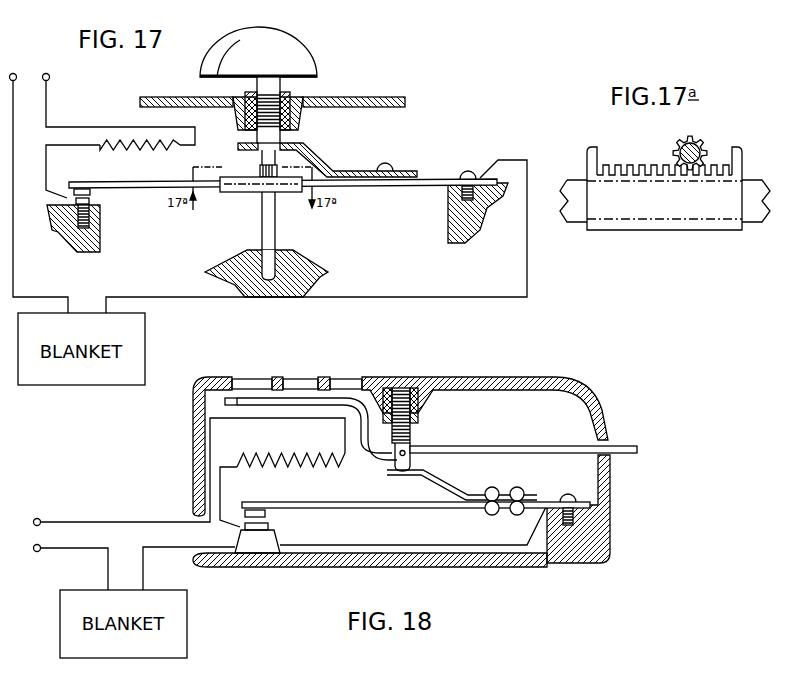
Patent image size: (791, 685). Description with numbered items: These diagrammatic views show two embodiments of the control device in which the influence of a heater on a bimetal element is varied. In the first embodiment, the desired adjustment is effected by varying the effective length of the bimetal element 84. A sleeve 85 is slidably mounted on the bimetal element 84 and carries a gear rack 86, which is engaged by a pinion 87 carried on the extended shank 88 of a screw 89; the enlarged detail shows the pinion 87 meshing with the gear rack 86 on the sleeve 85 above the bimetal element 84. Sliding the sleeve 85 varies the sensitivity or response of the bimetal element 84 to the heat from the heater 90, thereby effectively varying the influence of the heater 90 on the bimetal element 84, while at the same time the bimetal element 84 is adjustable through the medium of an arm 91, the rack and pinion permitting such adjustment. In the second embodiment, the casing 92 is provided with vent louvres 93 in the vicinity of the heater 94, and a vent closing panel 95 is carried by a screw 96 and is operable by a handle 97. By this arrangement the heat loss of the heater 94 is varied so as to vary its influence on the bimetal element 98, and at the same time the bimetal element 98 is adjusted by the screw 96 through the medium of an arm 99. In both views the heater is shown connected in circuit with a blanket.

In FIG. 17, the bimetal element 84 is at (170, 188).
In FIG. 17A, the bimetal element 84 is at (752, 198).
In FIG. 17, the sleeve 85 is at (304, 228).
In FIG. 17A, the sleeve 85 is at (654, 210).
In FIG. 17A, the gear rack 86 is at (648, 166).
In FIG. 17, the pinion 87 is at (258, 170).
In FIG. 17A, the pinion 87 is at (707, 150).
In FIG. 17, the extended shank 88 is at (262, 218).
In FIG. 17A, the extended shank 88 is at (694, 143).
In FIG. 17, the screw 89 is at (287, 98).
In FIG. 17, the heater 90 is at (160, 144).
In FIG. 17, the arm 91 is at (322, 167).
In FIG. 18, the casing 92 is at (447, 378).
In FIG. 18, the vent louvres 93 is at (343, 382).
In FIG. 18, the heater 94 is at (277, 462).
In FIG. 18, the vent closing panel 95 is at (230, 402).
In FIG. 18, the screw 96 is at (408, 430).
In FIG. 18, the handle 97 is at (615, 448).
In FIG. 18, the bimetal element 98 is at (450, 505).
In FIG. 18, the arm 99 is at (462, 493).